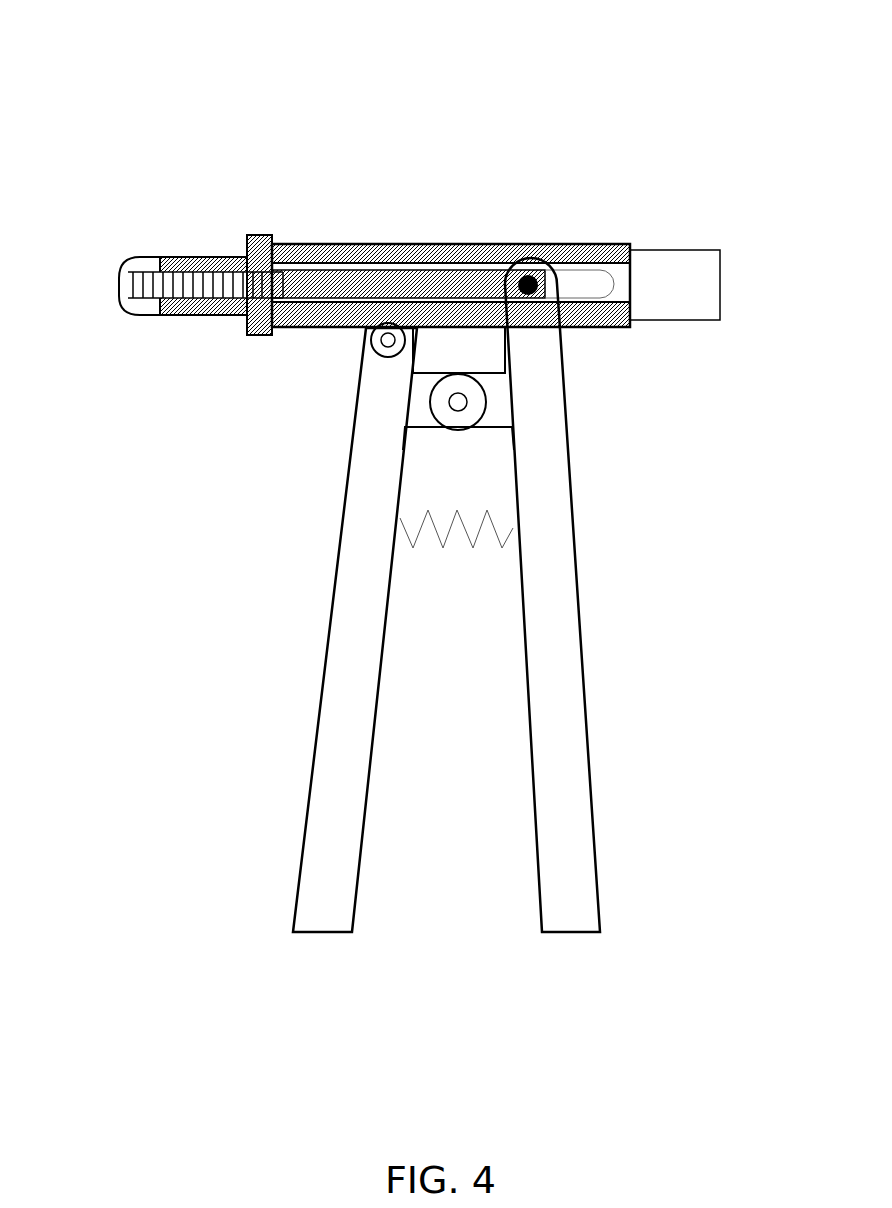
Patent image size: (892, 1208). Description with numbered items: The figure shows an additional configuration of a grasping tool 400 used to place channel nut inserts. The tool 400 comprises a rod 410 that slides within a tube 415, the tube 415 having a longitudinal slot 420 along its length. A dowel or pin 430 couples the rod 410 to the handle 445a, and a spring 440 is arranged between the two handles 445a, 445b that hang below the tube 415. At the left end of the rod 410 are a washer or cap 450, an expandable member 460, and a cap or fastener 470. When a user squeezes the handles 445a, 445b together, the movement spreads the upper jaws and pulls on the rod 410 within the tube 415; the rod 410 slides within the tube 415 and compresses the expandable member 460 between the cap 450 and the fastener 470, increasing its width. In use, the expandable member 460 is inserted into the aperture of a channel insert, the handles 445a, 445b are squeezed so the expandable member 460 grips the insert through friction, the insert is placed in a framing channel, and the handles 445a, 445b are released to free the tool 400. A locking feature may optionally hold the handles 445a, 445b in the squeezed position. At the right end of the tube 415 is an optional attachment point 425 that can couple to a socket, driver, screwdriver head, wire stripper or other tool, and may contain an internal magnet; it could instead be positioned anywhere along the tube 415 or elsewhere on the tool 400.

The tool 400 is at (253, 143).
The rod 410 is at (186, 257).
The tube 415 is at (387, 250).
The longitudinal slot 420 is at (457, 260).
The attachment point 425 is at (723, 290).
The dowel or pin 430 is at (633, 404).
The spring 440 is at (551, 621).
The handle 445a is at (639, 595).
The handle 445b is at (365, 782).
The washer or cap 450 is at (257, 337).
The expandable member 460 is at (198, 320).
The fastener 470 is at (134, 318).